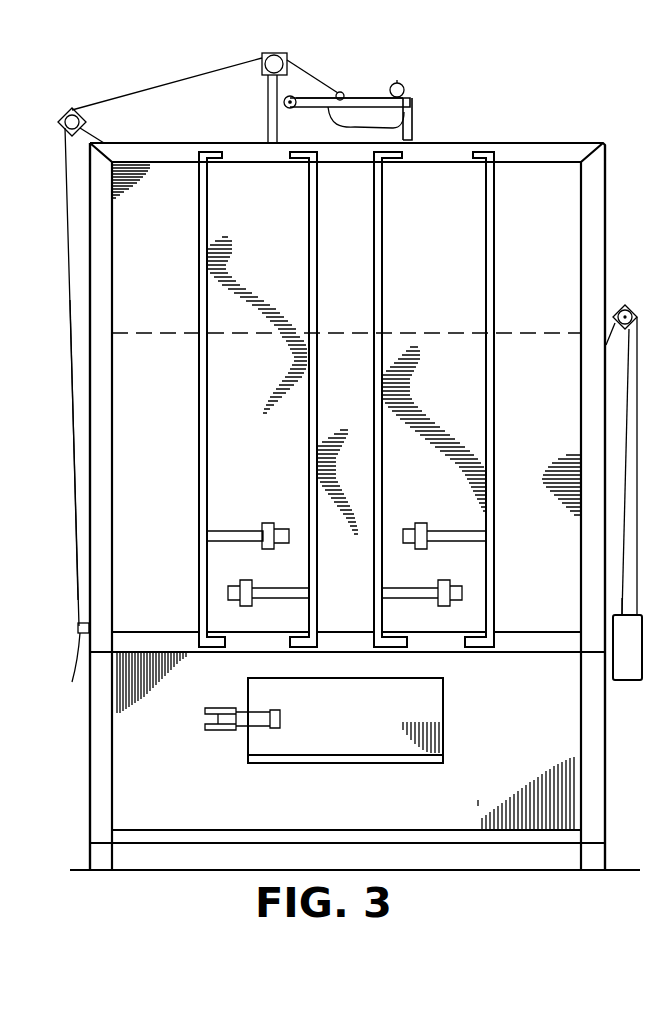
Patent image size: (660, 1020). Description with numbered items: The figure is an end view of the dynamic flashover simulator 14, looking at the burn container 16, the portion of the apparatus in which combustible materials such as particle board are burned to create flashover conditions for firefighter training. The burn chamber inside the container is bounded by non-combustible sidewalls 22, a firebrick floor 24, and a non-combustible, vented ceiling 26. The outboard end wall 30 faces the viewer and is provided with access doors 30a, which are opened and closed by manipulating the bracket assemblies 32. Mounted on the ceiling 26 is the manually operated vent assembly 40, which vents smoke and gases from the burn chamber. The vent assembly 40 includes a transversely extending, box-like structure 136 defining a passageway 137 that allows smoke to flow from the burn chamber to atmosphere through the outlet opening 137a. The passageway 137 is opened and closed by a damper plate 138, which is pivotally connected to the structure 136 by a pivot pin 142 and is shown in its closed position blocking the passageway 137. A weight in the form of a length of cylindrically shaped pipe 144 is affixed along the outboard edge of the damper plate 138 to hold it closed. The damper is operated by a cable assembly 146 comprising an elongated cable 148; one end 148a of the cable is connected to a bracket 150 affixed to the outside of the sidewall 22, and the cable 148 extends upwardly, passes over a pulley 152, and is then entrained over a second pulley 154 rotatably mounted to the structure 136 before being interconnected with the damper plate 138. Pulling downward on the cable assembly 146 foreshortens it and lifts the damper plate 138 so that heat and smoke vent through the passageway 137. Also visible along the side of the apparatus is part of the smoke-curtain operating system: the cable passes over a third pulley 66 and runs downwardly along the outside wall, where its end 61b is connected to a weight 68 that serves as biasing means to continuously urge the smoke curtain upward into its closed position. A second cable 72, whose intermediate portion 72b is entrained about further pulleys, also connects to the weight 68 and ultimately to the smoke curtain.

The dynamic flashover simulator 14 is at (523, 103).
The burn container 16 is at (555, 140).
The sidewalls 22 is at (86, 301).
The firebrick floor 24 is at (467, 655).
The vented ceiling 26 is at (548, 150).
The outboard end wall 30 is at (553, 215).
The access doors 30a is at (346, 435).
The bracket assemblies 32 is at (197, 358).
The manually operated vent assembly 40 is at (393, 72).
The cable end 61b is at (623, 598).
The third pulley 66 is at (617, 312).
The weight 68 is at (620, 662).
The second cable 72 is at (625, 523).
The intermediate portion 72b is at (637, 573).
The box-like structure 136 is at (412, 120).
The passageway 137 is at (357, 120).
The outlet opening 137a is at (393, 130).
The damper plate 138 is at (312, 108).
The pivot pin 142 is at (285, 104).
The cylindrically shaped pipe 144 is at (404, 91).
The cable assembly 146 is at (175, 87).
The elongated cable 148 is at (197, 77).
The cable end 148a is at (73, 520).
The bracket 150 is at (87, 626).
The pulley 152 is at (75, 103).
The second pulley 154 is at (288, 58).